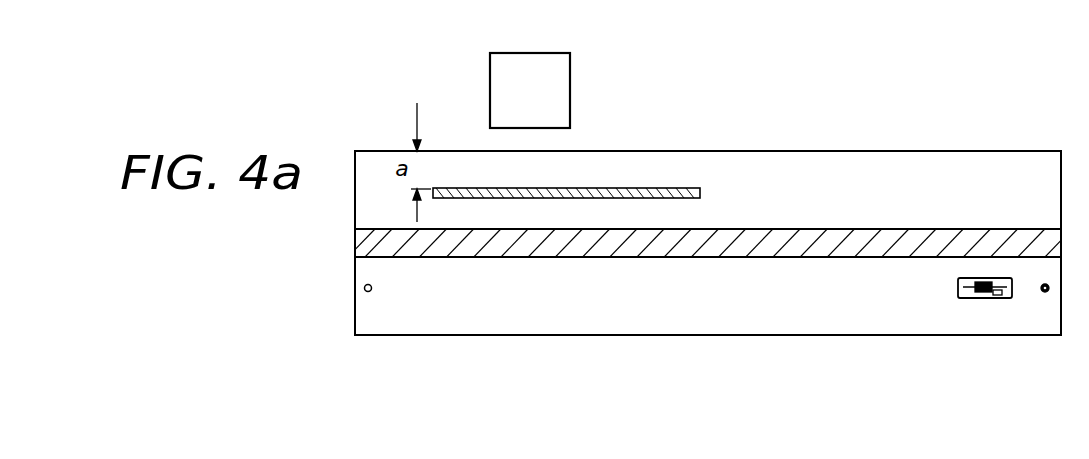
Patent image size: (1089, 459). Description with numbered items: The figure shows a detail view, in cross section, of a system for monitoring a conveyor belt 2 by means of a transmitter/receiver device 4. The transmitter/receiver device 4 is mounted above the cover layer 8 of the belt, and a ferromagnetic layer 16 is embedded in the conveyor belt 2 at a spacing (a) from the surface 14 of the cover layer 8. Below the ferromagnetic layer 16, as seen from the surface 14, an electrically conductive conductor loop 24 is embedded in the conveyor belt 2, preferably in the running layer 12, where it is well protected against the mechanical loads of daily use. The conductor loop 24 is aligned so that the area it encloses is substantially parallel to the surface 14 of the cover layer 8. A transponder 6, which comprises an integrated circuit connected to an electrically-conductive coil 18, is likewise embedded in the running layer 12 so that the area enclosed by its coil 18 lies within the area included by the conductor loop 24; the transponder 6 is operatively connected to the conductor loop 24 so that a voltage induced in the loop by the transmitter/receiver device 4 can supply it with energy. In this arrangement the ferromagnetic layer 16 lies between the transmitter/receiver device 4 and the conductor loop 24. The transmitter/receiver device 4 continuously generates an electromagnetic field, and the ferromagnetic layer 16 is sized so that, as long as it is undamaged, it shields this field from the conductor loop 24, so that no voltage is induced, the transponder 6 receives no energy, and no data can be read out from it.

The conveyor belt 2 is at (777, 308).
The transmitter/receiver device 4 is at (570, 97).
The transponder 6 is at (983, 298).
The cover layer 8 is at (840, 182).
The running layer 12 is at (940, 312).
The surface 14 is at (772, 151).
The ferromagnetic layer 16 is at (663, 188).
The electrically-conductive coil 18 is at (1000, 298).
The conductor loop 24 is at (372, 291).